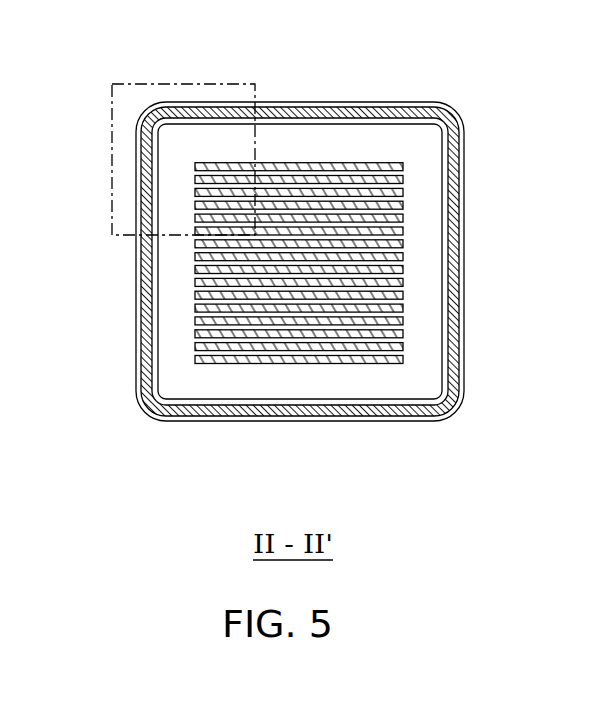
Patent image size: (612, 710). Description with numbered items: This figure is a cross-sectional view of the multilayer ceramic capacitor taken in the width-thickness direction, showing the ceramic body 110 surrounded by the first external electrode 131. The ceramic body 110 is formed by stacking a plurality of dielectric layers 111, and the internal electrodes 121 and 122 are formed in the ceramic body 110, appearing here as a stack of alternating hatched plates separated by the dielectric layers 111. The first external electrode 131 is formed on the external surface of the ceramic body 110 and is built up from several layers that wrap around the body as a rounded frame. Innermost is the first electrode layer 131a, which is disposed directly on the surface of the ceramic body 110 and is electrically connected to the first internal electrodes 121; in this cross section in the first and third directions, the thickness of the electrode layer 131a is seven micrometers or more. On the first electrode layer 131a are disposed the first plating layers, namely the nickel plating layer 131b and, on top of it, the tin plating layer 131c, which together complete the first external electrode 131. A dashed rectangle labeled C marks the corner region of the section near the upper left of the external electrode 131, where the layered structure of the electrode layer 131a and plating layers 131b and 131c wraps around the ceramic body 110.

The ceramic body 110 is at (352, 210).
The dielectric layers 111 is at (403, 173).
The first internal electrodes 121 is at (403, 165).
The second internal electrodes 122 is at (403, 180).
The first external electrode 131 is at (269, 322).
The first electrode layer 131a is at (245, 498).
The nickel plating layer 131b is at (150, 417).
The tin plating layer 131c is at (217, 421).
The corner region C is at (112, 158).